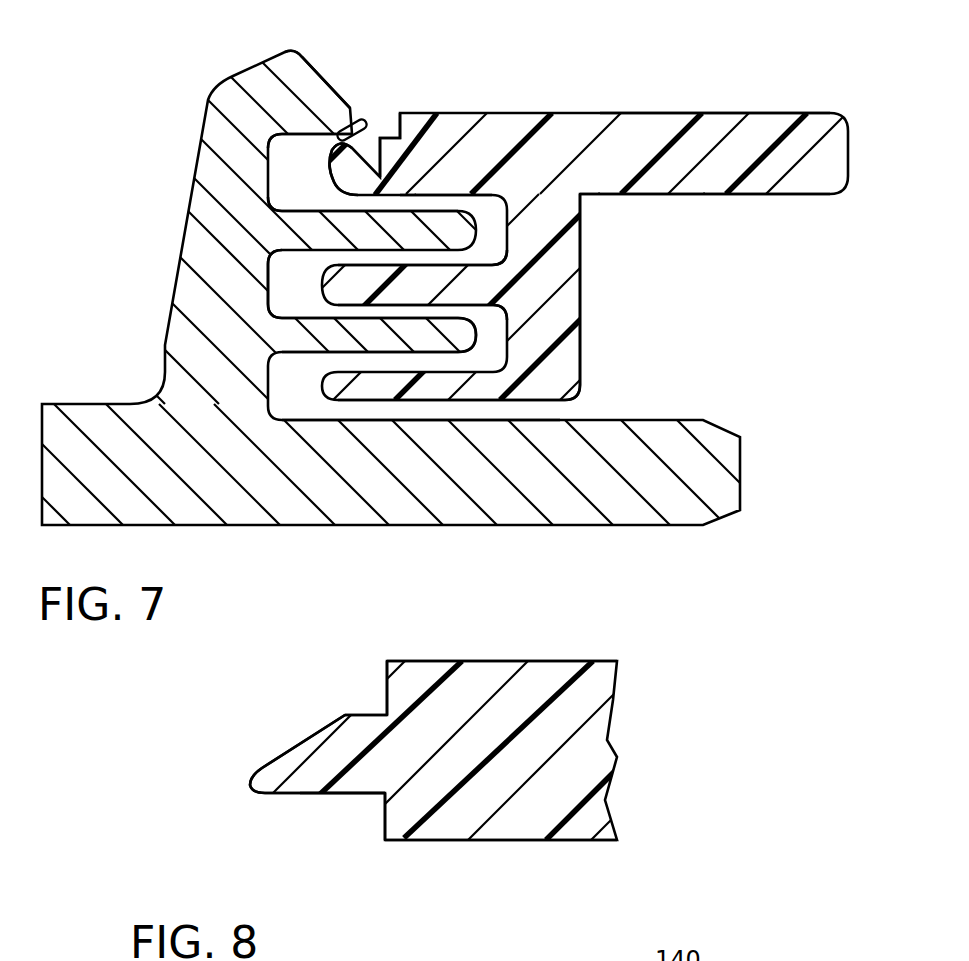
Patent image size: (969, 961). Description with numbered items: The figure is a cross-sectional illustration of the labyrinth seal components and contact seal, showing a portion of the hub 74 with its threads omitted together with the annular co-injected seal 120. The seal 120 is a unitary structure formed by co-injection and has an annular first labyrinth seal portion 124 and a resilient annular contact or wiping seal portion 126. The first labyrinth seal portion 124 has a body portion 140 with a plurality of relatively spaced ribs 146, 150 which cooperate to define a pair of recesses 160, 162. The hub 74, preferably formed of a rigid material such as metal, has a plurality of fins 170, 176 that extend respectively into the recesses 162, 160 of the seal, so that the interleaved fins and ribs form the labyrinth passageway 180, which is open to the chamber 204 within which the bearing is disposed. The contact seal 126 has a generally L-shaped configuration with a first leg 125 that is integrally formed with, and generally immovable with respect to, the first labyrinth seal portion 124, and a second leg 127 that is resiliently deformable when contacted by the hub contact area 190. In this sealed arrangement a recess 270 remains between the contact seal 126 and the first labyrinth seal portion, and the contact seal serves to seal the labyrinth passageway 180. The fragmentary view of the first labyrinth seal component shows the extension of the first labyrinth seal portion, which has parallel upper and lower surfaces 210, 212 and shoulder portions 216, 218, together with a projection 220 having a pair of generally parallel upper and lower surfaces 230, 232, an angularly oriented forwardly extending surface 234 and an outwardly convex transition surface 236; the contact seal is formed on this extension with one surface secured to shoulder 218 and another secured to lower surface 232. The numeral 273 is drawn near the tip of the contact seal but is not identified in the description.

In FIG. 7, the hub 74 is at (97, 393).
In FIG. 7, the annular co-injected seal 120 is at (771, 105).
In FIG. 7, the contact area 190 is at (318, 108).
In FIG. 7, the contact seal portion 126 is at (366, 117).
In FIG. 7, the recess 270 is at (373, 137).
In FIG. 7, the second leg 127 is at (322, 152).
In FIG. 7, the hook tip 273 is at (340, 171).
In FIG. 7, the first leg 125 is at (340, 200).
In FIG. 7, the fin 170 is at (335, 247).
In FIG. 7, the rib 146 is at (497, 156).
In FIG. 7, the body portion 140 is at (653, 137).
In FIG. 8, the body portion 140 is at (580, 697).
In FIG. 7, the first labyrinth seal portion 124 is at (708, 111).
In FIG. 7, the recess 162 is at (443, 221).
In FIG. 7, the recess 160 is at (455, 296).
In FIG. 7, the chamber 204 is at (775, 307).
In FIG. 7, the labyrinth passageway 180 is at (545, 413).
In FIG. 7, the fin 176 is at (323, 343).
In FIG. 7, the rib 150 is at (410, 397).
In FIG. 8, the upper surface 210 is at (460, 663).
In FIG. 8, the shoulder portion 216 is at (387, 688).
In FIG. 8, the upper surface 230 is at (363, 720).
In FIG. 8, the angularly oriented forwardly extending surface 234 is at (273, 757).
In FIG. 8, the outwardly convex transition surface 236 is at (250, 782).
In FIG. 8, the projection 220 is at (313, 773).
In FIG. 8, the lower surface 232 is at (347, 797).
In FIG. 8, the shoulder portion 218 is at (378, 823).
In FIG. 8, the lower surface 212 is at (503, 840).